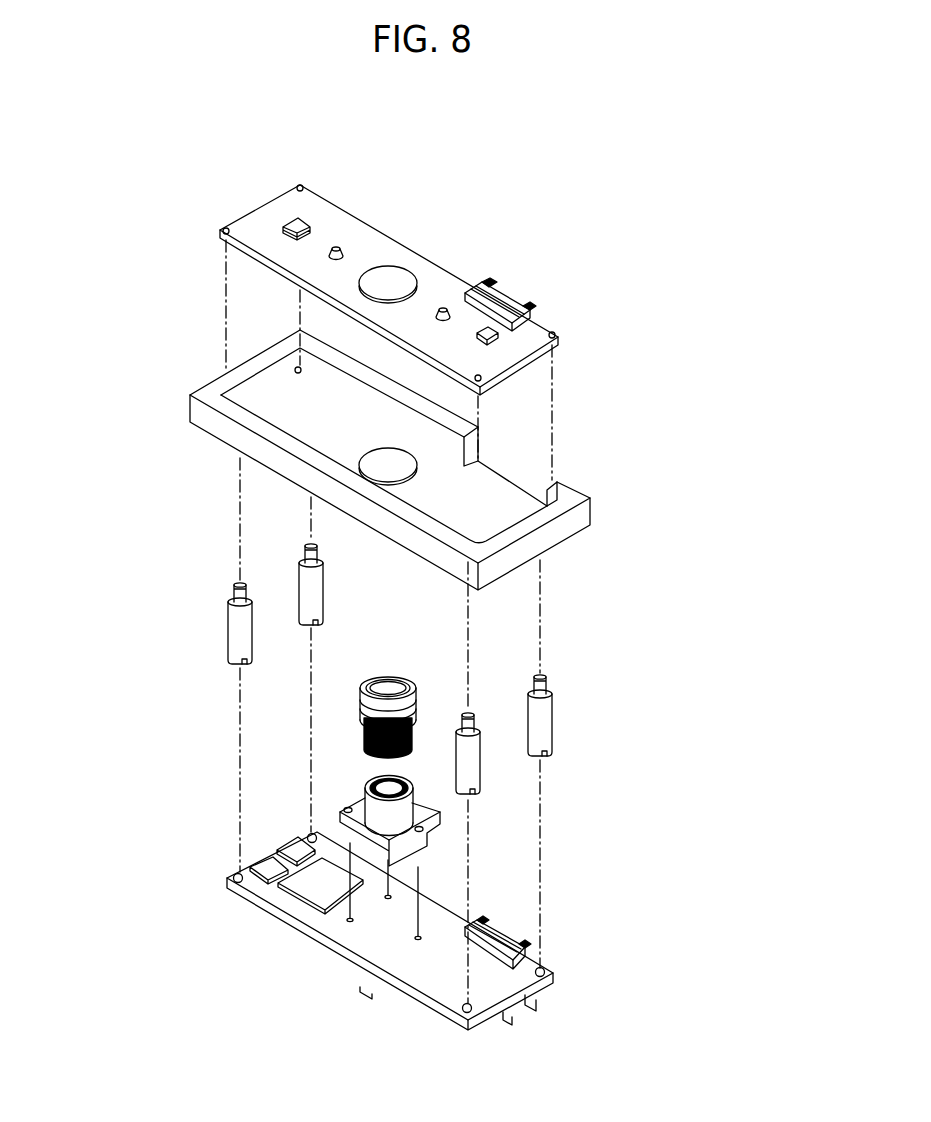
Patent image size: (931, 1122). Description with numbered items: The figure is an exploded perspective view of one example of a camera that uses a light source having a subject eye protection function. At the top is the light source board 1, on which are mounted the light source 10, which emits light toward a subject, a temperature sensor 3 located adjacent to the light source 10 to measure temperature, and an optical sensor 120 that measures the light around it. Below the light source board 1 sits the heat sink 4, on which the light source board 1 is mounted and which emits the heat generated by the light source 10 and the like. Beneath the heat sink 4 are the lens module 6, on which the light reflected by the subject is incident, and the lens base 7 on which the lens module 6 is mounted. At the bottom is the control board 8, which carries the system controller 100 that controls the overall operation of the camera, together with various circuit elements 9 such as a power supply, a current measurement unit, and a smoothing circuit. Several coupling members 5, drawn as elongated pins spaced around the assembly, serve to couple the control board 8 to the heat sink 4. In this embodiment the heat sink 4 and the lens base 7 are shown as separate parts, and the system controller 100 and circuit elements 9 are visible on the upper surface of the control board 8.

The light source board 1 is at (432, 233).
The light source 10 is at (302, 218).
The temperature sensor 3 is at (336, 247).
The optical sensor 120 is at (444, 307).
The heat sink 4 is at (497, 490).
The coupling member 5 is at (233, 628).
The lens module 6 is at (359, 703).
The lens base 7 is at (437, 808).
The control board 8 is at (395, 962).
The circuit element 9 is at (293, 842).
The system controller 100 is at (317, 890).